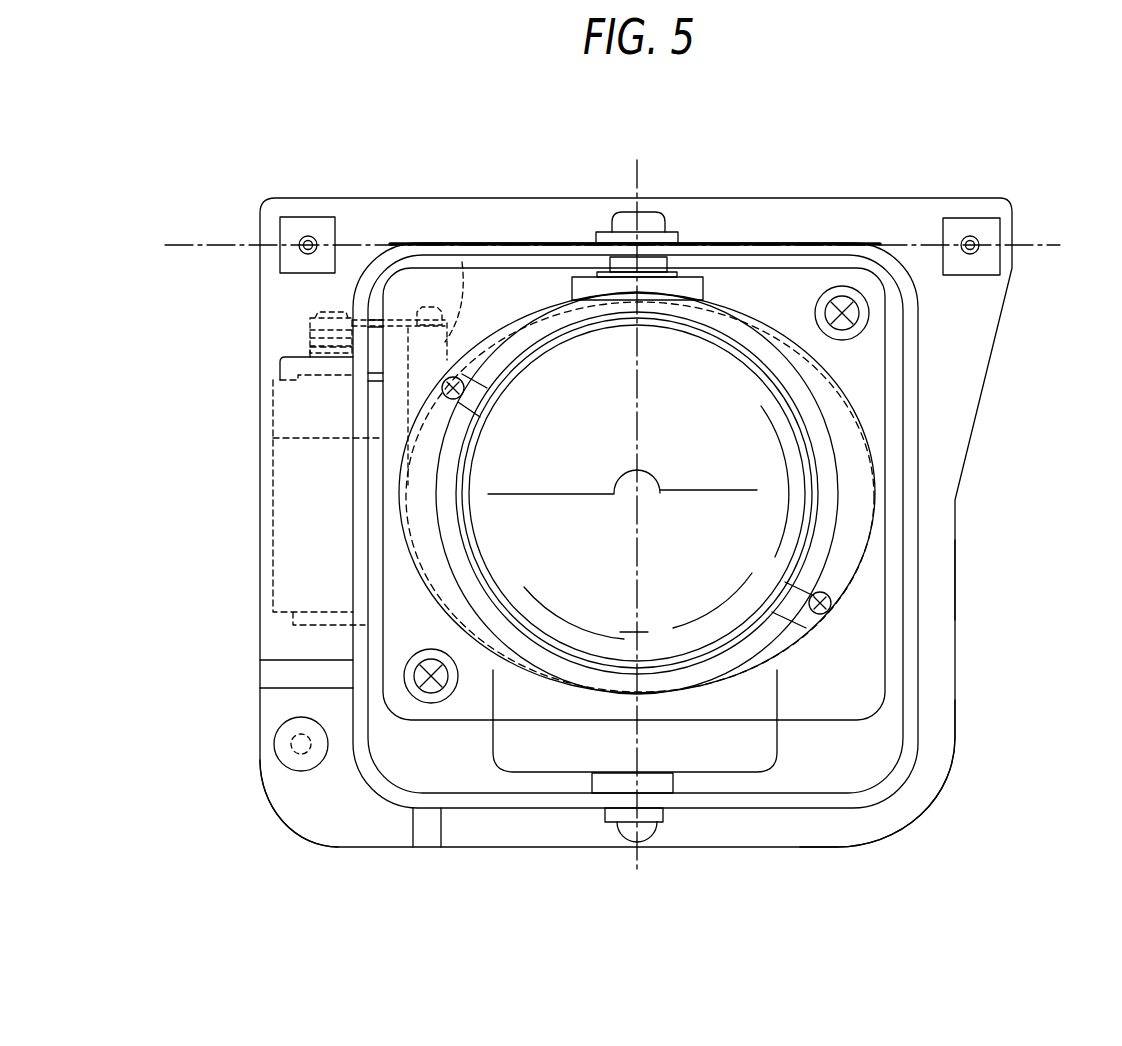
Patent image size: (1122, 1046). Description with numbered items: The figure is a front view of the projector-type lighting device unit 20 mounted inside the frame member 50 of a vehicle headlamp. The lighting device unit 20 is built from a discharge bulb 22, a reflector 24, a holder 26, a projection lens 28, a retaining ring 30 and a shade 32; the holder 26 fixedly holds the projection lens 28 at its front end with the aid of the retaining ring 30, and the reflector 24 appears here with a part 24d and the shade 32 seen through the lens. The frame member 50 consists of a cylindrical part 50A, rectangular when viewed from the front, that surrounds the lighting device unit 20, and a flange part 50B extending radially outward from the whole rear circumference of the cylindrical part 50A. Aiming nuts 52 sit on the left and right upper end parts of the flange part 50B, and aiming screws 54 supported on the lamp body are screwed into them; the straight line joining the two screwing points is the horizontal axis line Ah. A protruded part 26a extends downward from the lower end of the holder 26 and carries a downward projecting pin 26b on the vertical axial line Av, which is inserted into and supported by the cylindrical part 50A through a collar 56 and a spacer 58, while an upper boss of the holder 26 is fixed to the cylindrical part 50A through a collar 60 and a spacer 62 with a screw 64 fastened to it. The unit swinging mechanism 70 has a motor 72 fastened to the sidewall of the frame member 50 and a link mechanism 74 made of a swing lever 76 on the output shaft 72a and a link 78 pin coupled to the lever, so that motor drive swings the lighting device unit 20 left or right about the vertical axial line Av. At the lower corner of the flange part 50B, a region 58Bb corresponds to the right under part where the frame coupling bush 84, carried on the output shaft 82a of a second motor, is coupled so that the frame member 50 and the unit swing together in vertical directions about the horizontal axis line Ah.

The lighting device unit 20 is at (802, 244).
The discharge bulb 22 is at (652, 468).
The reflector 24 is at (838, 372).
The ring projection 24d is at (462, 262).
The holder 26 is at (874, 452).
The protruded part 26a is at (520, 740).
The downward projecting pin 26b is at (643, 828).
The projection lens 28 is at (813, 543).
The retaining ring 30 is at (780, 621).
The shade 32 is at (586, 490).
The frame member 50 is at (962, 505).
The cylindrical part 50A is at (918, 694).
The flange part 50B is at (948, 565).
The aiming nut 52 is at (332, 222).
The aiming screw 54 is at (306, 238).
The collar 56 is at (607, 814).
The spacer 58 is at (598, 773).
The bracket corner 58Bb is at (316, 812).
The collar 60 is at (678, 232).
The spacer 62 is at (705, 280).
The screw 64 is at (650, 218).
The unit swinging mechanism 70 is at (257, 393).
The motor 72 is at (300, 428).
The output shaft 72a is at (310, 343).
The link mechanism 74 is at (300, 307).
The swing lever 76 is at (310, 318).
The link 78 is at (418, 307).
The output shaft 82a is at (299, 744).
The frame coupling bush 84 is at (288, 762).
The horizontal axis line Ah is at (224, 244).
The vertical axial line Av is at (634, 172).